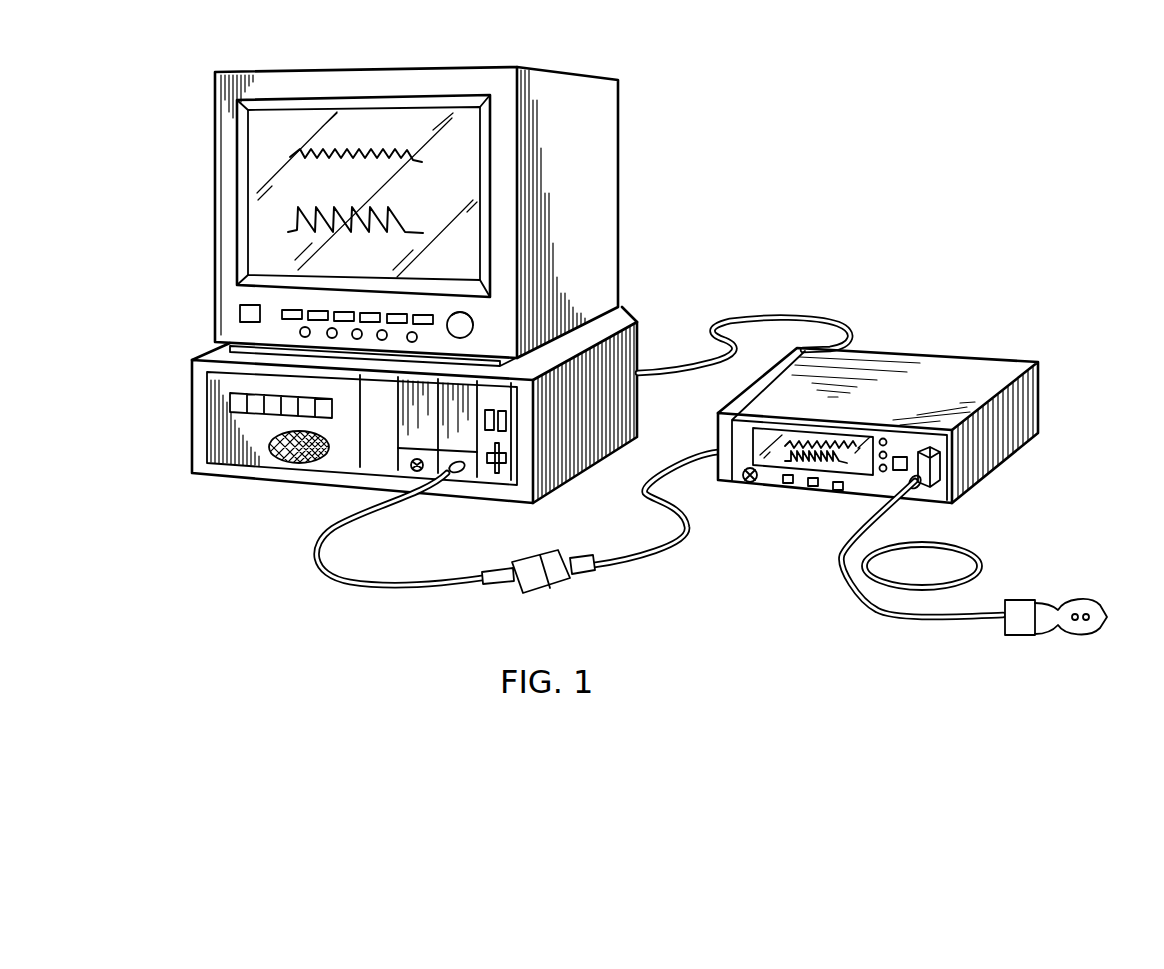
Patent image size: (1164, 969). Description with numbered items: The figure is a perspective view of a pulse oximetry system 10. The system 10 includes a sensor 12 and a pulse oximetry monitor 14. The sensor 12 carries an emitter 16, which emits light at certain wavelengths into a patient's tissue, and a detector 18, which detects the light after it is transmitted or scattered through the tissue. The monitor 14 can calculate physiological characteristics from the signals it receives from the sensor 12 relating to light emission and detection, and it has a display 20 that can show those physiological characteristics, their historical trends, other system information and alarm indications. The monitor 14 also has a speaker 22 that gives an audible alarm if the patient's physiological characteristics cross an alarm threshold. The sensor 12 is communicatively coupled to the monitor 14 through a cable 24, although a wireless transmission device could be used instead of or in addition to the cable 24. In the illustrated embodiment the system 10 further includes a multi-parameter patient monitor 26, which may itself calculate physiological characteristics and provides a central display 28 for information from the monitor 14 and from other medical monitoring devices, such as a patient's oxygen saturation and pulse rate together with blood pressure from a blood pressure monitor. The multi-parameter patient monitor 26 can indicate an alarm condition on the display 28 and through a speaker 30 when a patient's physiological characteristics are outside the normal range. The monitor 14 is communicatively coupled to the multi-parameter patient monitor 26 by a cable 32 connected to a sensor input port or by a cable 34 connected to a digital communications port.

The pulse oximetry system 10 is at (902, 201).
The sensor 12 is at (1117, 607).
The pulse oximetry monitor 14 is at (940, 357).
The emitter 16 is at (1075, 623).
The detector 18 is at (1087, 623).
The display 20 is at (820, 468).
The speaker 22 is at (740, 487).
The cable 24 is at (870, 605).
The multi-parameter patient monitor 26 is at (570, 80).
The central display 28 is at (262, 232).
The speaker 30 is at (283, 460).
The cable 32 is at (632, 560).
The cable 34 is at (765, 317).